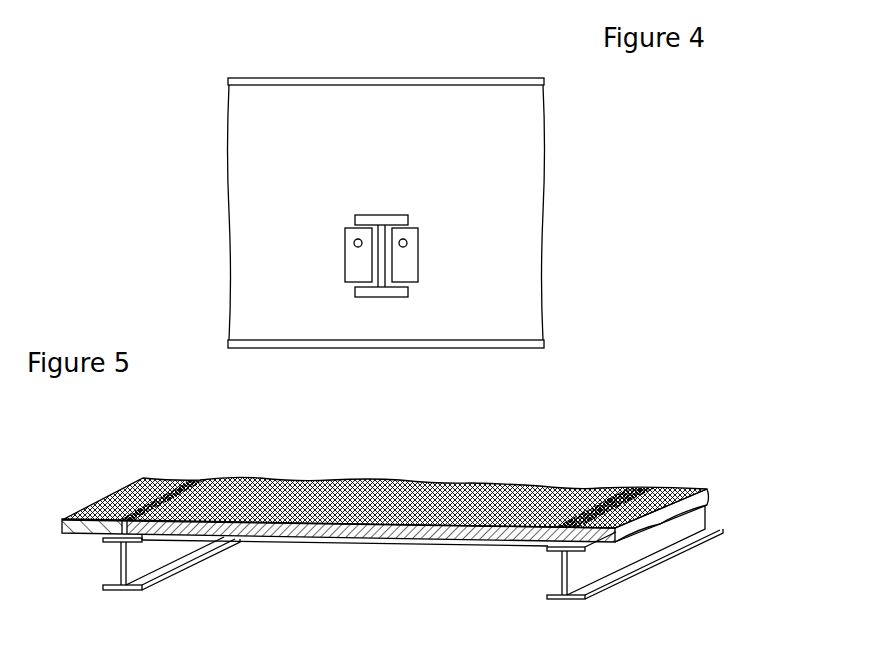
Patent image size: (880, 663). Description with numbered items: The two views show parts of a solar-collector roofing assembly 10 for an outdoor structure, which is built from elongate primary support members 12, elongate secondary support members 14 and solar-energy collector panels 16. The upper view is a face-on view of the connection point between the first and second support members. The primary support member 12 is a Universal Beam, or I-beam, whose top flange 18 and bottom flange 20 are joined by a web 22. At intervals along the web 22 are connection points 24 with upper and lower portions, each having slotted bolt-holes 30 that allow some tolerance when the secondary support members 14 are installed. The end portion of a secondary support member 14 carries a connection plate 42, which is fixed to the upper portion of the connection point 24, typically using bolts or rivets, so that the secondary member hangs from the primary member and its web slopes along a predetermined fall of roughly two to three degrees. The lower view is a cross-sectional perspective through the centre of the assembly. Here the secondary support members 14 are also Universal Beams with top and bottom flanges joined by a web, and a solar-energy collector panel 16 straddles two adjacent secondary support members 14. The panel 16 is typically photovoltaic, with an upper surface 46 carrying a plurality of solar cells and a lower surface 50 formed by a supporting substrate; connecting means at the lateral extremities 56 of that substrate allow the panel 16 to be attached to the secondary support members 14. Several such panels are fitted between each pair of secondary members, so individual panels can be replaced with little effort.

In FIG. 4, the solar-collector roofing assembly 10 is at (354, 204).
In FIG. 5, the solar-collector roofing assembly 10 is at (375, 526).
In FIG. 4, the primary support member 12 is at (357, 204).
In FIG. 5, the primary support member 12 is at (385, 515).
In FIG. 4, the secondary support member 14 is at (445, 248).
In FIG. 5, the solar-energy collector panel 16 is at (162, 478).
In FIG. 4, the top flange 18 is at (262, 77).
In FIG. 4, the bottom flange 20 is at (347, 349).
In FIG. 4, the web 22 is at (262, 277).
In FIG. 4, the connection point 24 is at (430, 222).
In FIG. 4, the bolt-hole 30 is at (396, 243).
In FIG. 4, the connection plate 42 is at (351, 270).
In FIG. 5, the upper surface 46 is at (396, 471).
In FIG. 5, the lower surface 50 is at (358, 547).
In FIG. 5, the lateral extremities 56 is at (153, 533).